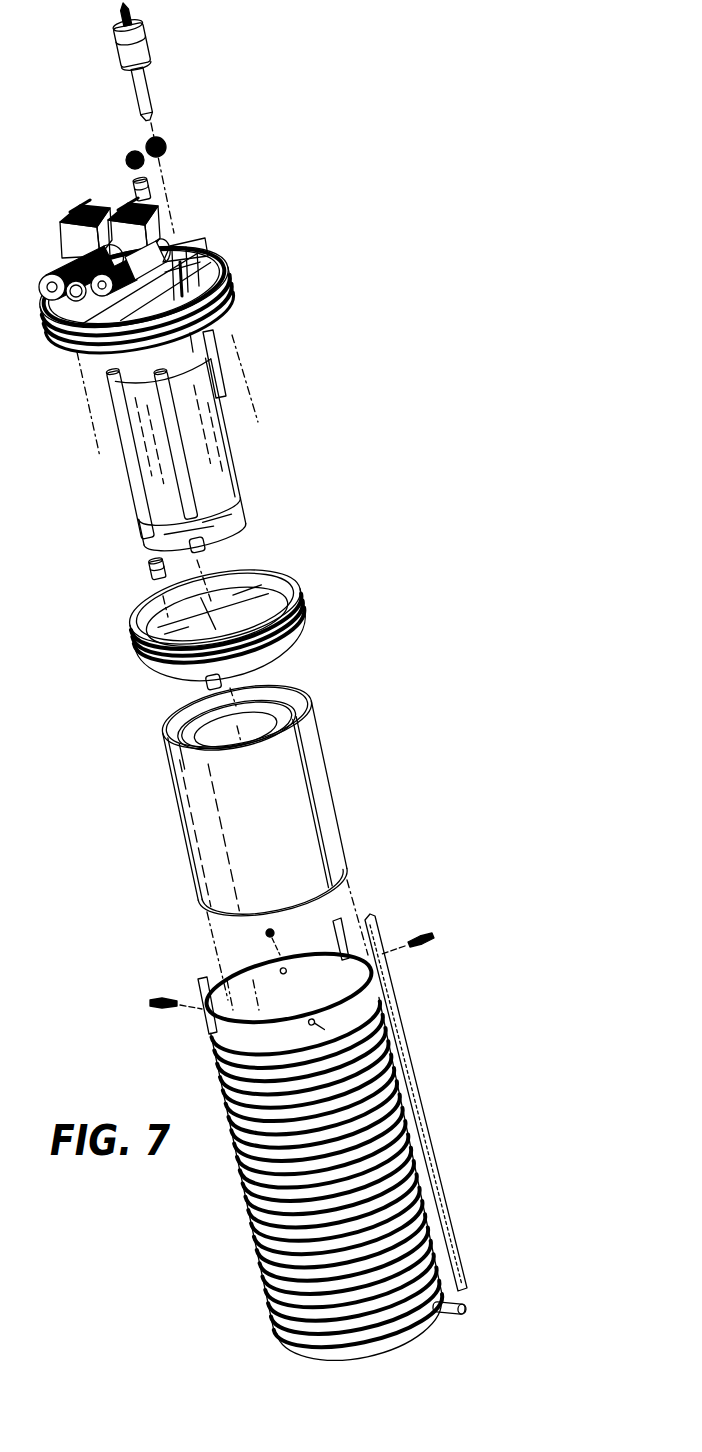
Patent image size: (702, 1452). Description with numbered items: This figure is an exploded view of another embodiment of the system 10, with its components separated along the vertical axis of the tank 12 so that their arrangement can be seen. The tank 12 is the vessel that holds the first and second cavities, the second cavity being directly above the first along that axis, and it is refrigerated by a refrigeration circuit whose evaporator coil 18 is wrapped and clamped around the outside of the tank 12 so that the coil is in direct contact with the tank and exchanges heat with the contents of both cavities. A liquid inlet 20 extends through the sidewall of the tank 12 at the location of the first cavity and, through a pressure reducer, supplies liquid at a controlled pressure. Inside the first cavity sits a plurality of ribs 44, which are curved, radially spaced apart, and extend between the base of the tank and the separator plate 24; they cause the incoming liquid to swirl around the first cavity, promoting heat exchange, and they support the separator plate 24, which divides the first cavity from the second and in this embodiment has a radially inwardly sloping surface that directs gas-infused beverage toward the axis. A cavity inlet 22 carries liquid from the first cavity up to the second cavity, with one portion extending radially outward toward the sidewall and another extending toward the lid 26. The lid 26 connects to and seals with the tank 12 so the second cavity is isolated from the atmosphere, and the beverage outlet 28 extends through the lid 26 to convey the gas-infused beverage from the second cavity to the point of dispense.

The system 10 is at (505, 1060).
The tank 12 is at (307, 1343).
The evaporator coil 18 is at (383, 1140).
The liquid inlet 20 is at (457, 1303).
The cavity inlet 22 is at (135, 455).
The separator plate 24 is at (290, 628).
The lid 26 is at (231, 276).
The beverage outlet 28 is at (181, 467).
The ribs 44 is at (327, 787).